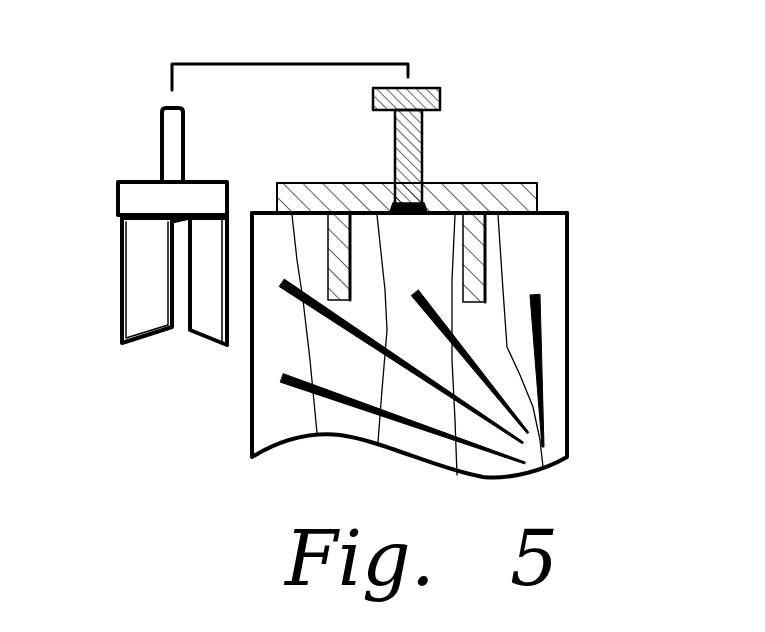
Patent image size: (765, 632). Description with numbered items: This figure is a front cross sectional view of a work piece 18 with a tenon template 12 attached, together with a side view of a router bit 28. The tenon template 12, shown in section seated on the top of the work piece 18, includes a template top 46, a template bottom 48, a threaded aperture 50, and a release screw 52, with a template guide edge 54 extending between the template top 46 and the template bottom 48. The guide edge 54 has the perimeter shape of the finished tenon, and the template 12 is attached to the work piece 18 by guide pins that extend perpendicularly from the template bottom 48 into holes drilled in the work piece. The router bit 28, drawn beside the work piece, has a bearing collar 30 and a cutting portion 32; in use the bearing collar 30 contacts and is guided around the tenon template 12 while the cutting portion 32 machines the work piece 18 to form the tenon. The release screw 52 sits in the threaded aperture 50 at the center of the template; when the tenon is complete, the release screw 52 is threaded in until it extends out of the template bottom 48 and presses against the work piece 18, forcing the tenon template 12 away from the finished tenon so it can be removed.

The tenon template 12 is at (538, 195).
The work piece 18 is at (335, 355).
The router bit 28 is at (120, 307).
The bearing collar 30 is at (118, 202).
The cutting portion 32 is at (132, 272).
The template top 46 is at (497, 182).
The template bottom 48 is at (518, 220).
The threaded aperture 50 is at (424, 180).
The release screw 52 is at (438, 88).
The template guide edge 54 is at (273, 200).